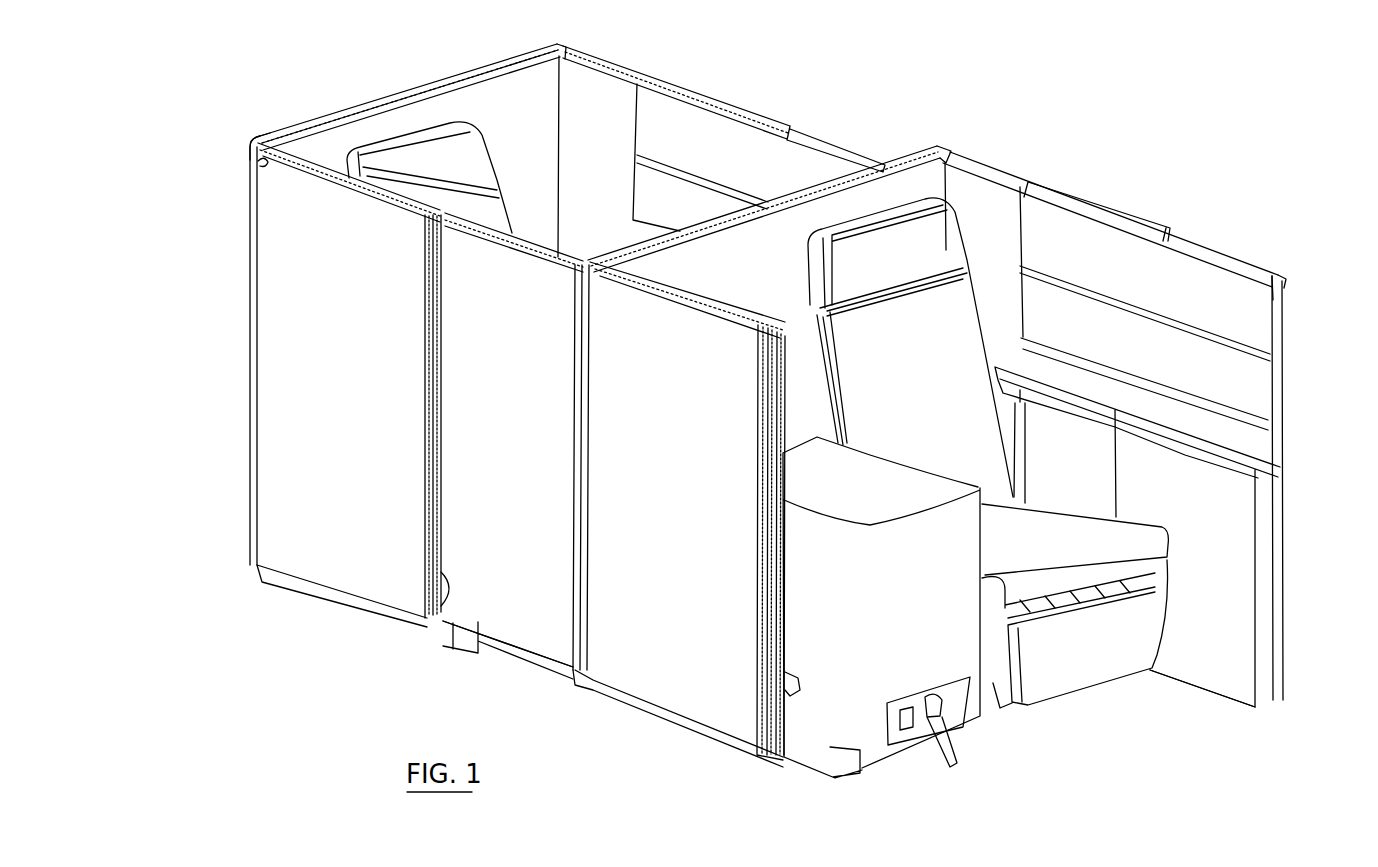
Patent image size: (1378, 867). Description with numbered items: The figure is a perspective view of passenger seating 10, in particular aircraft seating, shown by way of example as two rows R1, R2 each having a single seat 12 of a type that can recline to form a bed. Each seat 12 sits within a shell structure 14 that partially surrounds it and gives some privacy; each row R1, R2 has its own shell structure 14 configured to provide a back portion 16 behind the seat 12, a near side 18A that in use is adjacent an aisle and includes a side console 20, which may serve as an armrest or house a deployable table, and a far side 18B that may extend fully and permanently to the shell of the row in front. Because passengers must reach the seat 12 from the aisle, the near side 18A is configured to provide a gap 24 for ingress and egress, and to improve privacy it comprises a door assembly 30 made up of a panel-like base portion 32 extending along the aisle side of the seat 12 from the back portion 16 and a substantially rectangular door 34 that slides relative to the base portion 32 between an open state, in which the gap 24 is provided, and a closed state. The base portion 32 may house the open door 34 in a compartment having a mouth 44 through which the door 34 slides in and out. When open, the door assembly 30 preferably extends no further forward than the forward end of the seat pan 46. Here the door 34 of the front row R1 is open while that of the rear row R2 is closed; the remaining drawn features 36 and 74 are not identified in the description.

The passenger seating 10 is at (1053, 117).
The seat 12 is at (461, 178).
The shell structure 14 is at (509, 56).
The back portion 16 is at (415, 90).
The near side 18A is at (263, 223).
The far side 18B is at (636, 80).
The console 20 is at (917, 600).
The gap 24 is at (886, 797).
The door assembly 30 is at (250, 136).
The base portion 32 is at (343, 400).
The door 34 is at (519, 442).
The door latch 36 is at (791, 689).
The mouth 44 is at (427, 618).
The seat pan 46 is at (1077, 573).
The upper guide 74 is at (250, 170).
The row R1 is at (1143, 178).
The row R2 is at (788, 88).